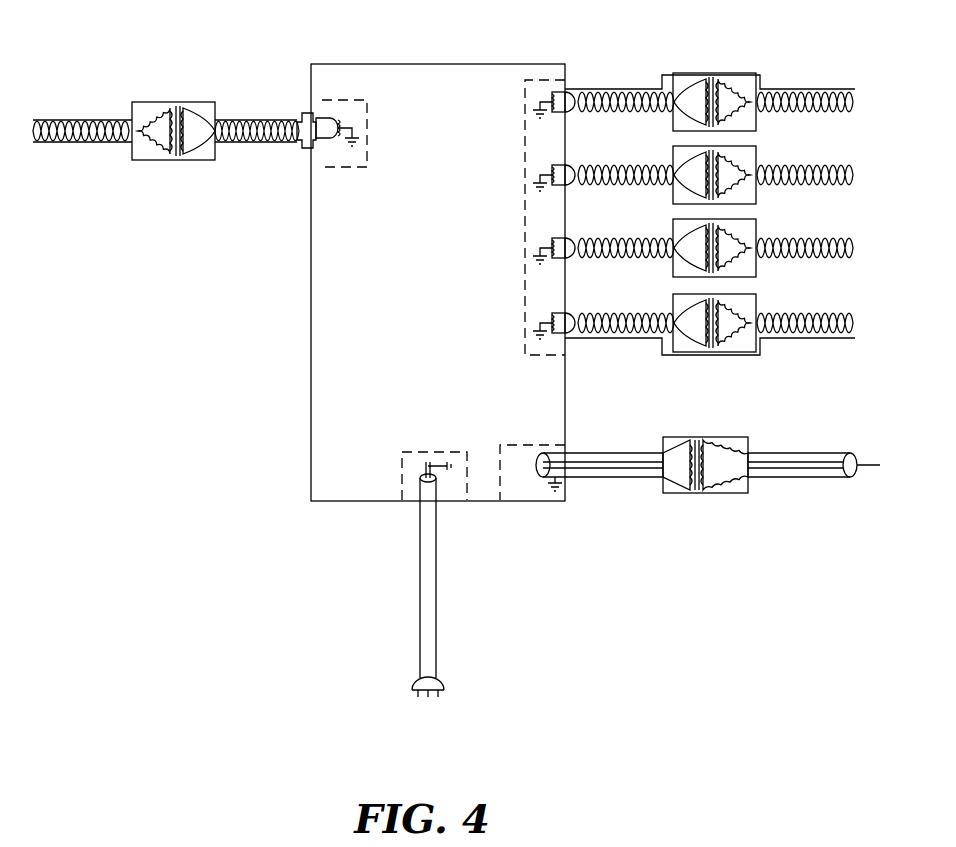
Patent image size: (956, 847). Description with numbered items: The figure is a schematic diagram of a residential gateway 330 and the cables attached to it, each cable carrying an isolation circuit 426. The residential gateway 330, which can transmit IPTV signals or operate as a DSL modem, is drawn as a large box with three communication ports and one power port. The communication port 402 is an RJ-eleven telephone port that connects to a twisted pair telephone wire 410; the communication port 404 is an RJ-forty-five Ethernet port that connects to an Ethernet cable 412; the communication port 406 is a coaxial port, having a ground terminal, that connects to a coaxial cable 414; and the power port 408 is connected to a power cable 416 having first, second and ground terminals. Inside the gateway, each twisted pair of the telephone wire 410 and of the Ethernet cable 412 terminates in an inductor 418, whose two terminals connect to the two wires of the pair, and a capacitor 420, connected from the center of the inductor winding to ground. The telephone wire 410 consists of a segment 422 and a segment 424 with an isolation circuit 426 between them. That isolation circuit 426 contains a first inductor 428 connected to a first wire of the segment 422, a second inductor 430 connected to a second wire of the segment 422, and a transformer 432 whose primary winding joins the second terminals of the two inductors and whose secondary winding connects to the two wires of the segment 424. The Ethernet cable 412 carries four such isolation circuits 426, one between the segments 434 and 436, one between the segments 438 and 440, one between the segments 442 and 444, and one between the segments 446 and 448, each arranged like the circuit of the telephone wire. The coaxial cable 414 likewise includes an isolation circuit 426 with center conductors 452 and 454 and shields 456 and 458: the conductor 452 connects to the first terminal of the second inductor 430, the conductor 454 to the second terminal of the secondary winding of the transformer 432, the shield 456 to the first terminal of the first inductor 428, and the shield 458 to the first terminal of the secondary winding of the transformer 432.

The residential gateway 330 is at (452, 64).
The communication port 402 is at (325, 168).
The communication port 404 is at (525, 192).
The communication port 406 is at (528, 443).
The power port 408 is at (402, 465).
The twisted pair telephone wire 410 is at (56, 142).
The Ethernet cable 412 is at (584, 344).
The coaxial cable 414 is at (578, 479).
The power cable 416 is at (437, 586).
The inductor 418 is at (339, 124).
The capacitor 420 is at (356, 142).
The segment 422 is at (95, 127).
The segment 424 is at (280, 120).
The isolation circuit 426 is at (163, 100).
The first inductor 428 is at (158, 118).
The second inductor 430 is at (158, 149).
The transformer 432 is at (183, 150).
The segment 434 is at (815, 98).
The segment 436 is at (646, 99).
The segment 438 is at (773, 176).
The segment 440 is at (646, 172).
The segment 442 is at (773, 246).
The segment 444 is at (596, 256).
The segment 446 is at (773, 321).
The segment 448 is at (620, 336).
The center conductor 452 is at (793, 478).
The center conductor 454 is at (628, 470).
The shield 456 is at (766, 452).
The shield 458 is at (640, 452).